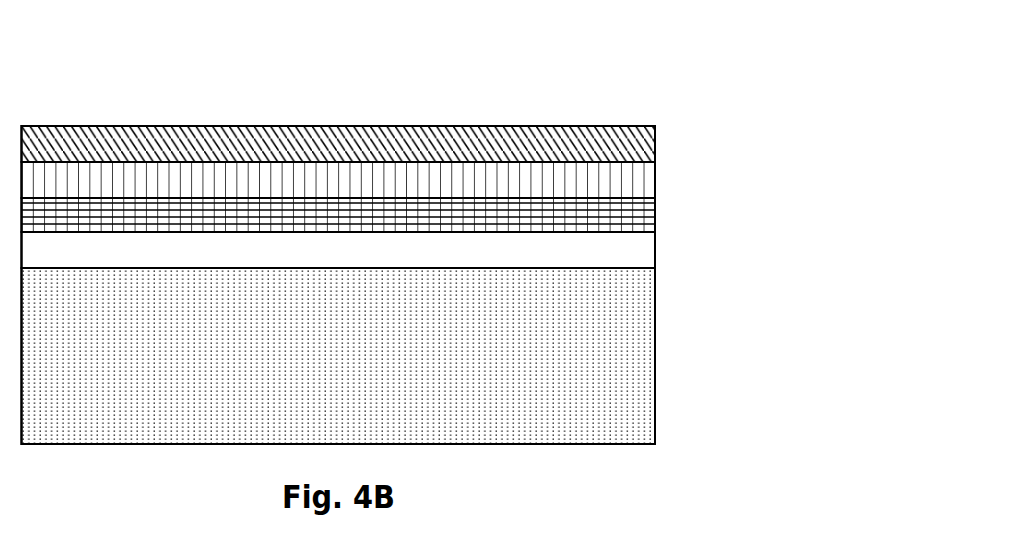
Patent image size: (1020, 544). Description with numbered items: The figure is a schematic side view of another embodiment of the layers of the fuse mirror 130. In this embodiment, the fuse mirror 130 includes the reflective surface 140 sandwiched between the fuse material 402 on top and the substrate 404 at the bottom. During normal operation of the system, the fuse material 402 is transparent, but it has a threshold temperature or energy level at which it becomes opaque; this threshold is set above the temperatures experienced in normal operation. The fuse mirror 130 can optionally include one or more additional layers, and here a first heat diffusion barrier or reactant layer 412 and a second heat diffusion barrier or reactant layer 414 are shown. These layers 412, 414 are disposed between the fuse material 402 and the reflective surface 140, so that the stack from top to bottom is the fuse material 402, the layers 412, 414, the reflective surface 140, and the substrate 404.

The fuse mirror 130 is at (676, 102).
The fuse material 402 is at (656, 143).
The first heat diffusion barrier or reactant layer 412 is at (656, 178).
The second heat diffusion barrier or reactant layer 414 is at (656, 212).
The reflective surface 140 is at (656, 248).
The substrate 404 is at (656, 323).